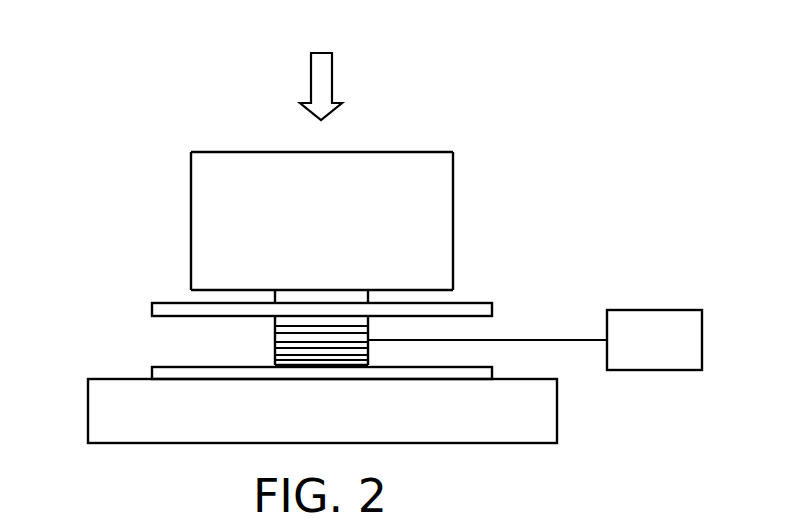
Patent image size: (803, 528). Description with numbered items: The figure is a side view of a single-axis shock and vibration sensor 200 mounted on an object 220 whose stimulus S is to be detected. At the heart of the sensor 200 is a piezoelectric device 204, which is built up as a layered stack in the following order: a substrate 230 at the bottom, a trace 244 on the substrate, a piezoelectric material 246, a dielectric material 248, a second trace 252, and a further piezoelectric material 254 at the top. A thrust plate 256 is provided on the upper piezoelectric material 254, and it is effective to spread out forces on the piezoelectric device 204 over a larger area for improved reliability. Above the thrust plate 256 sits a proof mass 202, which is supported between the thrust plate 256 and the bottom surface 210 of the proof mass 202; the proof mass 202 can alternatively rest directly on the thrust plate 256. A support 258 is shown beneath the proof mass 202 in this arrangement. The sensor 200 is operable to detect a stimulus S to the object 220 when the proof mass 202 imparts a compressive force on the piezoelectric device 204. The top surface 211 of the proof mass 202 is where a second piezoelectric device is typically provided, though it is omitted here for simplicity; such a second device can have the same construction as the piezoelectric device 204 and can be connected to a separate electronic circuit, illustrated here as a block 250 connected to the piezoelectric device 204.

The single-axis sensor 200 is at (566, 146).
The proof mass 202 is at (453, 207).
The top surface of the proof mass 211 is at (417, 152).
The bottom surface of the proof mass 210 is at (413, 290).
The support leg 258 is at (275, 290).
The thrust plate 256 is at (173, 303).
The piezoelectric material 254 is at (273, 320).
The trace 252 is at (368, 327).
The dielectric material 248 is at (275, 338).
The piezoelectric material 246 is at (368, 348).
The trace 244 is at (273, 363).
The piezoelectric device 204 is at (517, 318).
The substrate 230 is at (152, 368).
The object 220 is at (557, 410).
The controller 250 is at (678, 370).